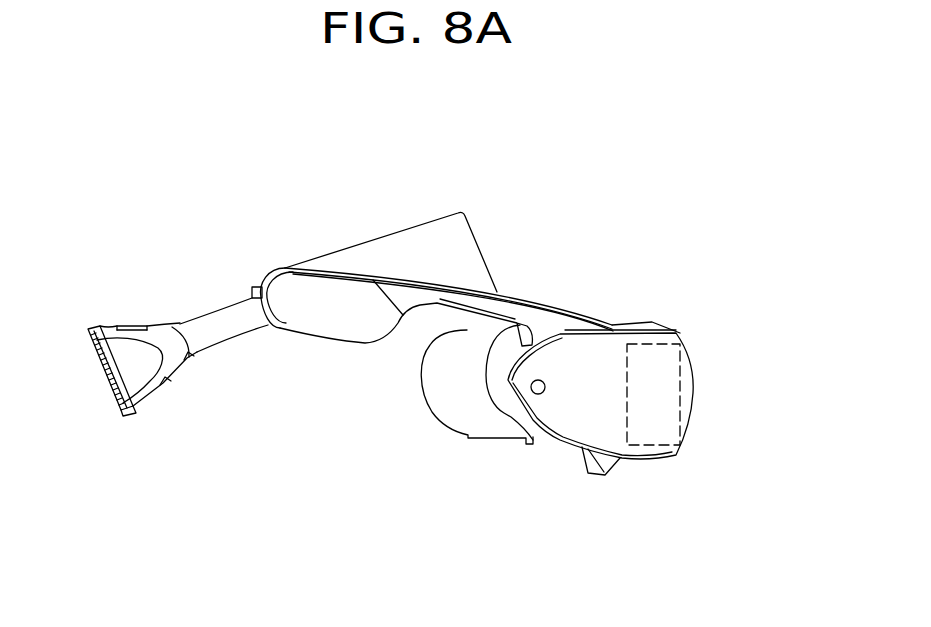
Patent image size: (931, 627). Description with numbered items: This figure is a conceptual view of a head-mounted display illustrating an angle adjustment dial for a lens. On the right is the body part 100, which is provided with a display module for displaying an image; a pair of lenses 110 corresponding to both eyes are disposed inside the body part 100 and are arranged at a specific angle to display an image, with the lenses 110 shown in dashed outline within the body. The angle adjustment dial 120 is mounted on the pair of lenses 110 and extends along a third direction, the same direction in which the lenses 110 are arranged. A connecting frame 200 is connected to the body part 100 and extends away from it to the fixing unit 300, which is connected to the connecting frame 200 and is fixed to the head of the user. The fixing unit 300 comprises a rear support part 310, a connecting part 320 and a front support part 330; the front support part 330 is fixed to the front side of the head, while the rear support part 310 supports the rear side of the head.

The body part 100 is at (691, 395).
The lenses 110 is at (664, 407).
The angle adjustment dial 120 is at (538, 394).
The connecting frame 200 is at (510, 312).
The fixing unit 300 is at (113, 196).
The rear support part 310 is at (134, 334).
The connecting part 320 is at (199, 332).
The front support part 330 is at (363, 262).